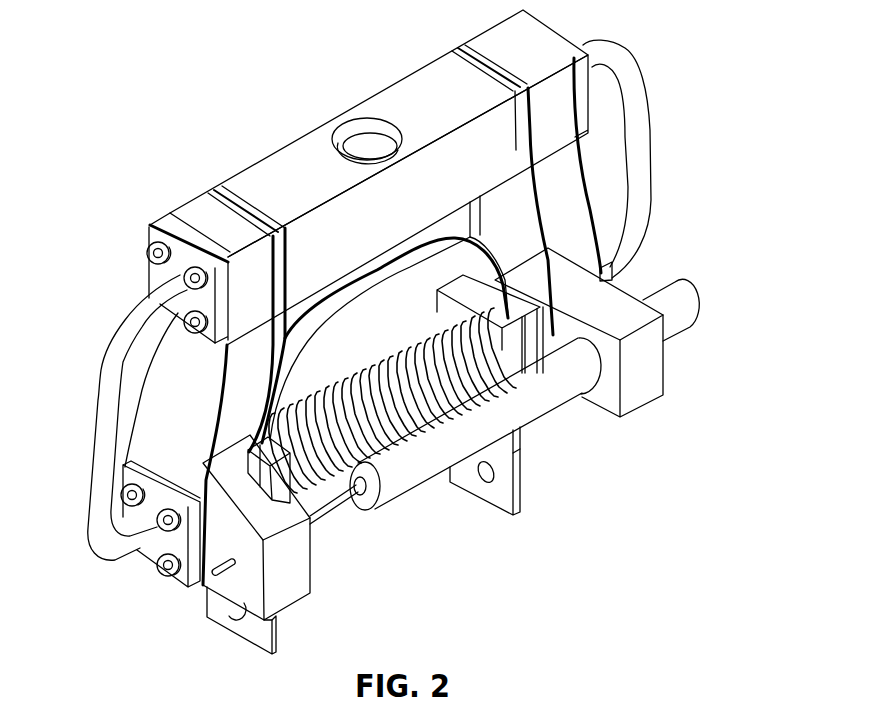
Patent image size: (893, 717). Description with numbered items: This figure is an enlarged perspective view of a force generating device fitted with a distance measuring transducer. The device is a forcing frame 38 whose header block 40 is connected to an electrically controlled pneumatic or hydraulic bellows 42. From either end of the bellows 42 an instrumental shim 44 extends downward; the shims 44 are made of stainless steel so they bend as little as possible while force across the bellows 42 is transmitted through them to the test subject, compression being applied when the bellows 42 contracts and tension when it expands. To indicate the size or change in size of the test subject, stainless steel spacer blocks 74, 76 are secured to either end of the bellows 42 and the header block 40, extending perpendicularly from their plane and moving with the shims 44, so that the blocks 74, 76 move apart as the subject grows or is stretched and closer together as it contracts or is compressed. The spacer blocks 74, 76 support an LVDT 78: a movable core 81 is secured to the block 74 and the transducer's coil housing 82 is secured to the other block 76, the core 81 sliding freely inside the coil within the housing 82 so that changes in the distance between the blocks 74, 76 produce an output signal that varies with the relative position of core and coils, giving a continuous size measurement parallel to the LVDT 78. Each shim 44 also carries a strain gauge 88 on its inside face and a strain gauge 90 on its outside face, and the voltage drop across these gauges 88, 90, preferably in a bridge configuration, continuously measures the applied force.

The forcing frame 38 is at (98, 440).
The header block 40 is at (247, 178).
The bellows 42 is at (420, 338).
The instrumental shim 44 is at (203, 605).
The spacer block 74 is at (302, 560).
The spacer block 76 is at (655, 360).
The LVDT 78 is at (413, 487).
The movable core 81 is at (327, 508).
The coil housing 82 is at (424, 409).
The strain gauge 88 is at (272, 613).
The strain gauge 90 is at (252, 615).